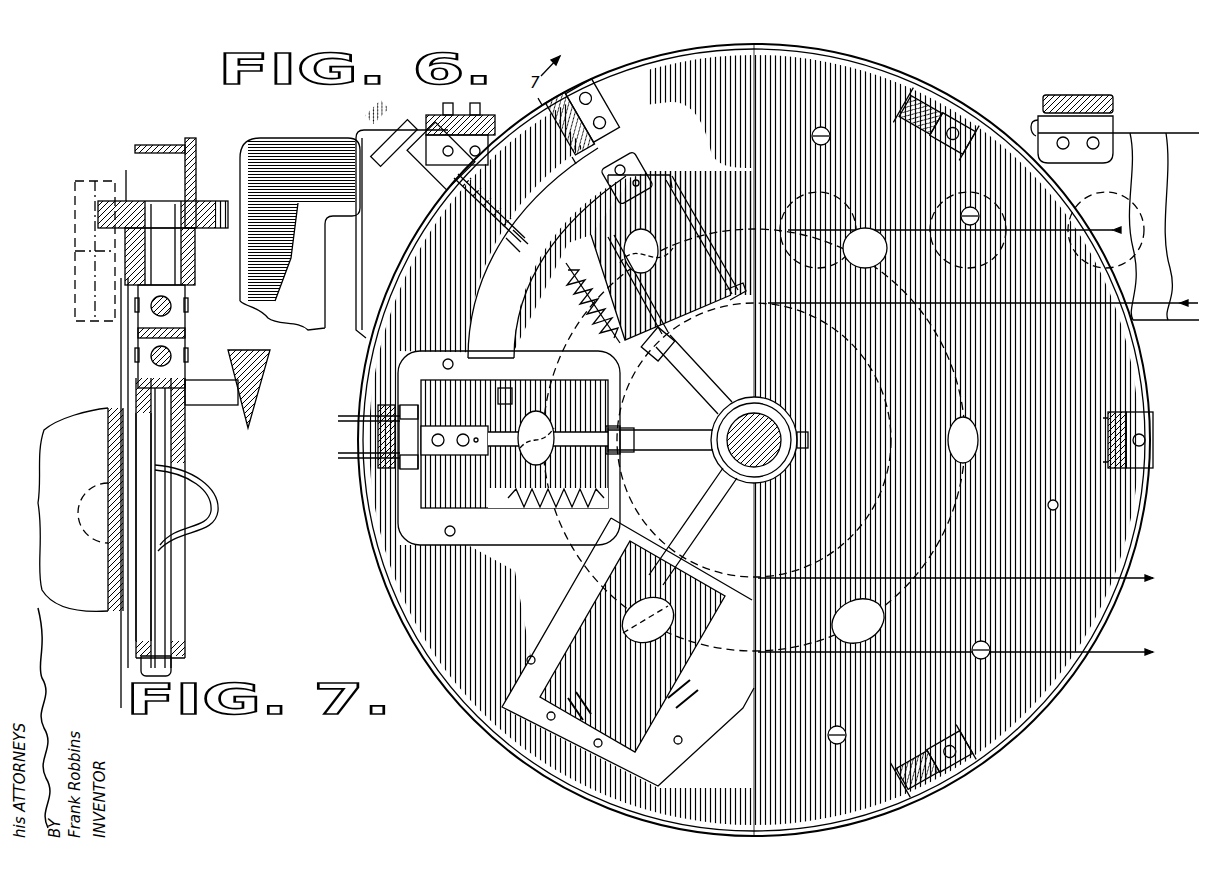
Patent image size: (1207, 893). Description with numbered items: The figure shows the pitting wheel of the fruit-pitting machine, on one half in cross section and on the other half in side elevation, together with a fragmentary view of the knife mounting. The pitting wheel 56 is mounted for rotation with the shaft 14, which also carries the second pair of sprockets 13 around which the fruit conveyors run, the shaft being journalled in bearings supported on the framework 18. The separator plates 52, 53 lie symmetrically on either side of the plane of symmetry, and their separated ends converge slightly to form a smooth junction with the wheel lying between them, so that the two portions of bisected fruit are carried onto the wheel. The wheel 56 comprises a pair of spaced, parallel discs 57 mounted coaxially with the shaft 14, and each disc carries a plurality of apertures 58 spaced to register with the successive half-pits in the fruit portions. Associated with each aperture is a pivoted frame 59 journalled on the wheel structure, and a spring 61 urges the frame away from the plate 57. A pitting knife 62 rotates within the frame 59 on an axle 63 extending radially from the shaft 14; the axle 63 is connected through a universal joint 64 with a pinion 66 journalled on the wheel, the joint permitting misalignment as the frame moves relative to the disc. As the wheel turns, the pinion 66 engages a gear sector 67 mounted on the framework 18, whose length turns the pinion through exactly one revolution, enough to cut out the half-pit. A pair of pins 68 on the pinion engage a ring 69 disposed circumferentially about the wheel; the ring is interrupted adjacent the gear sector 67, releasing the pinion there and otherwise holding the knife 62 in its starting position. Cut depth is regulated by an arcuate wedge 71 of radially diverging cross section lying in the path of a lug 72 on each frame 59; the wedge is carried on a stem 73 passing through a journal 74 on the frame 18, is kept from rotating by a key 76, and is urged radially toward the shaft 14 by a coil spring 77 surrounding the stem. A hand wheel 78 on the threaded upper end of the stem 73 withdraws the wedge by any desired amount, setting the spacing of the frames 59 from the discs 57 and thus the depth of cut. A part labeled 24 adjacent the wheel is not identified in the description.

In FIG. 7, the sprockets 13 is at (871, 499).
In FIG. 7, the shaft 14 is at (733, 440).
In FIG. 7, the framework 18 is at (263, 130).
In FIG. 6, the casing 24 is at (70, 412).
In FIG. 7, the separator plate 52 is at (1165, 125).
In FIG. 7, the separator plate 53 is at (1115, 126).
In FIG. 7, the pitting wheel 56 is at (385, 552).
In FIG. 6, the discs 57 is at (113, 351).
In FIG. 7, the discs 57 is at (395, 506).
In FIG. 6, the apertures 58 is at (120, 494).
In FIG. 7, the apertures 58 is at (878, 246).
In FIG. 6, the pivoted frame 59 is at (178, 451).
In FIG. 7, the pivoted frame 59 is at (690, 247).
In FIG. 7, the spring 61 is at (575, 290).
In FIG. 6, the pitting knife 62 is at (206, 483).
In FIG. 7, the pitting knife 62 is at (655, 246).
In FIG. 6, the axle 63 is at (158, 586).
In FIG. 7, the axle 63 is at (655, 338).
In FIG. 6, the universal joint 64 is at (178, 318).
In FIG. 7, the universal joint 64 is at (624, 150).
In FIG. 6, the pinion 66 is at (185, 197).
In FIG. 7, the pinion 66 is at (577, 92).
In FIG. 6, the gear sector 67 is at (68, 262).
In FIG. 7, the gear sector 67 is at (399, 268).
In FIG. 6, the pins 68 is at (186, 138).
In FIG. 7, the pins 68 is at (960, 110).
In FIG. 6, the ring 69 is at (149, 138).
In FIG. 7, the ring 69 is at (614, 65).
In FIG. 6, the arcuate wedge 71 is at (249, 386).
In FIG. 7, the arcuate wedge 71 is at (494, 336).
In FIG. 6, the lug 72 is at (203, 398).
In FIG. 7, the lug 72 is at (512, 378).
In FIG. 7, the stem 73 is at (470, 196).
In FIG. 7, the journal 74 is at (420, 160).
In FIG. 7, the key 76 is at (472, 173).
In FIG. 7, the coil spring 77 is at (487, 201).
In FIG. 7, the hand wheel 78 is at (405, 120).